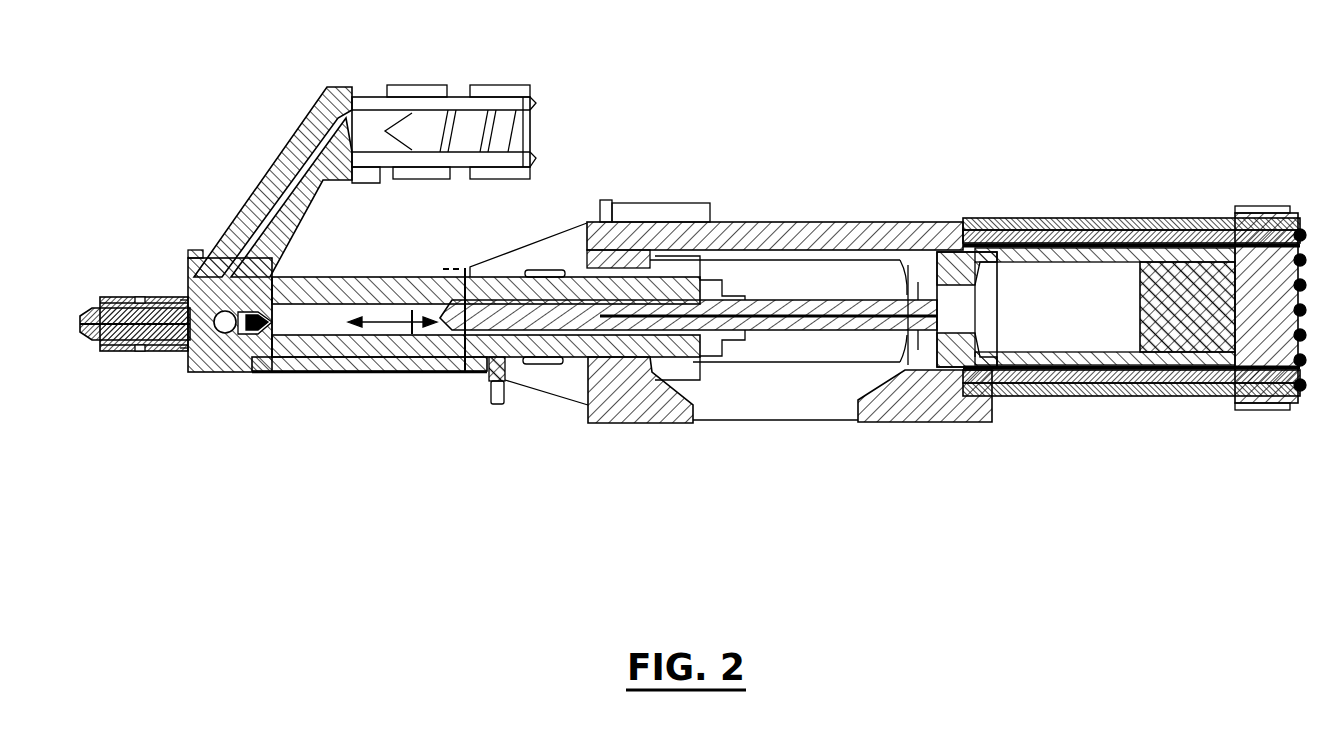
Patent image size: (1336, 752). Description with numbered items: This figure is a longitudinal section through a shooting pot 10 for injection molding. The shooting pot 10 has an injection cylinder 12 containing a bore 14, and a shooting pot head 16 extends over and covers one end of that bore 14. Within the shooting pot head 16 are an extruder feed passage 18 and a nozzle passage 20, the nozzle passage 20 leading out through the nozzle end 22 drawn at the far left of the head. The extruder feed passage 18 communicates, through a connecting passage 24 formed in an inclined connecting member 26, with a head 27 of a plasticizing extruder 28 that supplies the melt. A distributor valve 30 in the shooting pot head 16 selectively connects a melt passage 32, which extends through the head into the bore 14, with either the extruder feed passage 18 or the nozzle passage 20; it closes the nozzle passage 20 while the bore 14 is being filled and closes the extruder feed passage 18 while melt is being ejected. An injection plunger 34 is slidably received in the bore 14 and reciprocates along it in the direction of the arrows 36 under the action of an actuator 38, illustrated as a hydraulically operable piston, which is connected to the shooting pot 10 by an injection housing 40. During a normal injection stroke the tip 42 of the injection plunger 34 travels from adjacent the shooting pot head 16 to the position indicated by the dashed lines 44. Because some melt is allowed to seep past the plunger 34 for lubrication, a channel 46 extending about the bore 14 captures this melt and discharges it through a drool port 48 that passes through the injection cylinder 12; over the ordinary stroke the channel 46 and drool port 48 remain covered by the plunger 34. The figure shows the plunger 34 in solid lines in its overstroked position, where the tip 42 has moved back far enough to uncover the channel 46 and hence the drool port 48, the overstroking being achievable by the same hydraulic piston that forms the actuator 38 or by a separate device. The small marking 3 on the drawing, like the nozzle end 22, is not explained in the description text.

The section indicator 3 is at (508, 270).
The shooting pot 10 is at (252, 518).
The injection cylinder 12 is at (386, 277).
The bore 14 is at (318, 375).
The shooting pot head 16 is at (200, 375).
The extruder feed passage 18 is at (212, 250).
The nozzle passage 20 is at (158, 297).
The inlet tube 22 is at (112, 353).
The connecting passage 24 is at (258, 192).
The connecting member 26 is at (296, 135).
The head 27 is at (375, 88).
The plasticizing extruder 28 is at (505, 115).
The distributor valve 30 is at (192, 360).
The melt passage 32 is at (240, 375).
The injection plunger 34 is at (738, 300).
The arrows 36 is at (414, 278).
The actuator 38 is at (1150, 218).
The injection housing 40 is at (920, 222).
The tip 42 is at (446, 372).
The dashed lines 44 is at (380, 372).
The channel 46 is at (468, 272).
The drool port 48 is at (455, 380).